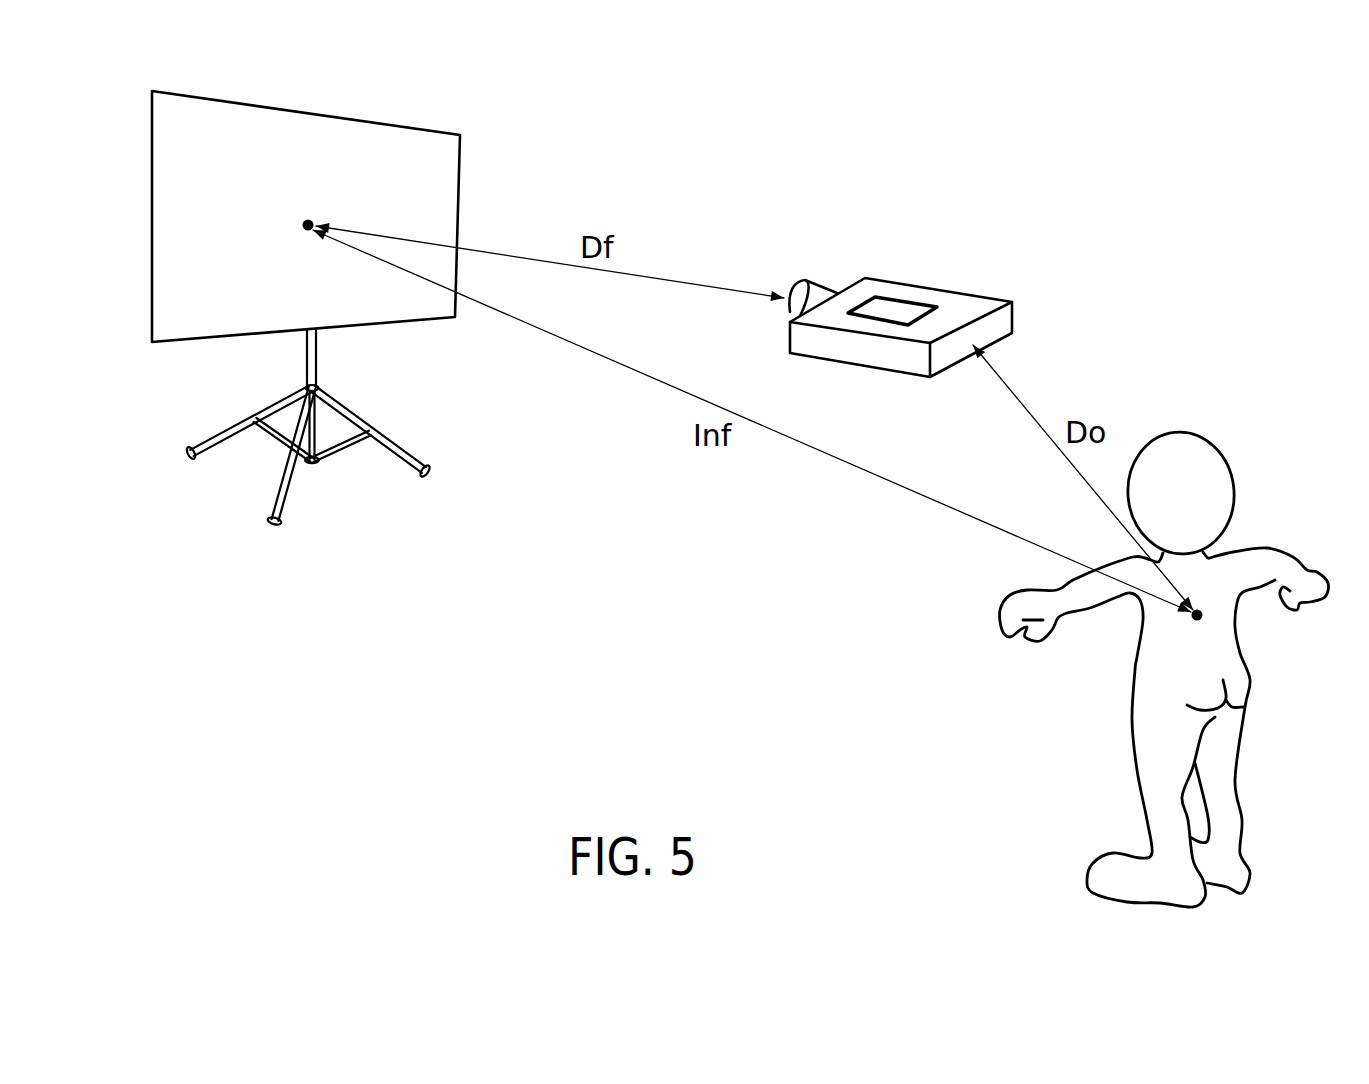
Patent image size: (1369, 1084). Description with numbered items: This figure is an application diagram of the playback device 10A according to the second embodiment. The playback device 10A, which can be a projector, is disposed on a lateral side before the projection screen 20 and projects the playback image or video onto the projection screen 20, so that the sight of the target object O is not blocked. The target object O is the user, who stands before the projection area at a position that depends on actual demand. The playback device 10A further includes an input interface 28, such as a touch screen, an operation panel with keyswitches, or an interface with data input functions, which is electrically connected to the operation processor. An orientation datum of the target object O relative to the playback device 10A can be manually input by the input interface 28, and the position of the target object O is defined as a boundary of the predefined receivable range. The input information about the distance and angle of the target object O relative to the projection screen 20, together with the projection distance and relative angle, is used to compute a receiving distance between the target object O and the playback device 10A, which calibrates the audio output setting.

The projection screen 20 is at (172, 238).
The playback device 10A is at (970, 310).
The input interface 28 is at (892, 305).
The target object O is at (1200, 463).